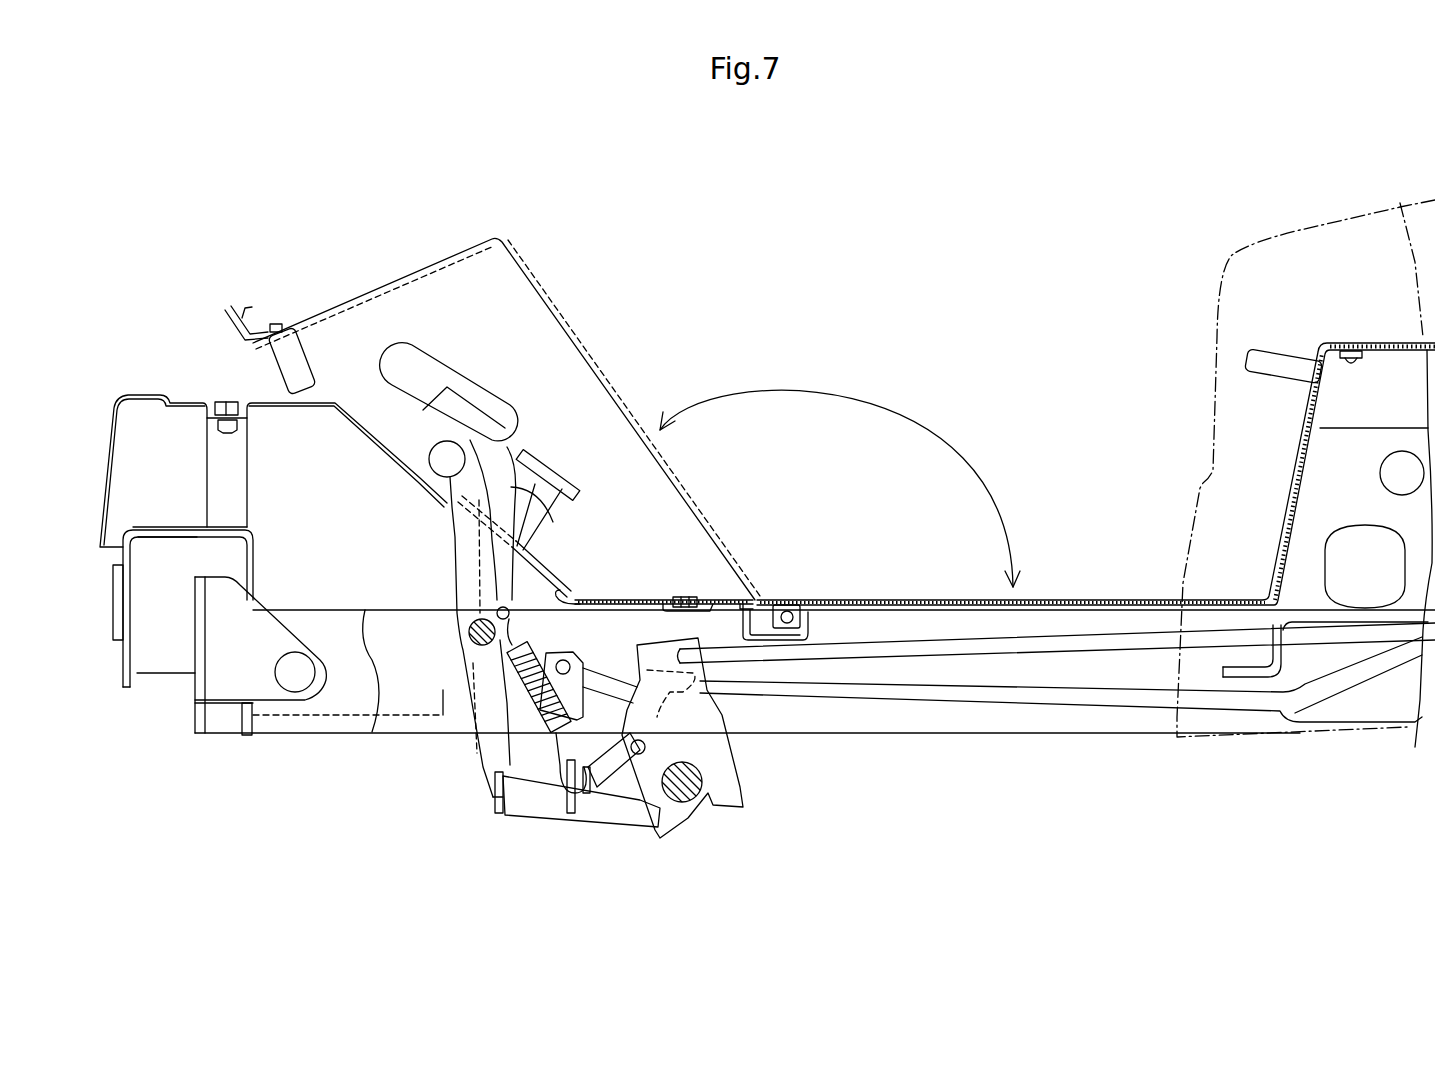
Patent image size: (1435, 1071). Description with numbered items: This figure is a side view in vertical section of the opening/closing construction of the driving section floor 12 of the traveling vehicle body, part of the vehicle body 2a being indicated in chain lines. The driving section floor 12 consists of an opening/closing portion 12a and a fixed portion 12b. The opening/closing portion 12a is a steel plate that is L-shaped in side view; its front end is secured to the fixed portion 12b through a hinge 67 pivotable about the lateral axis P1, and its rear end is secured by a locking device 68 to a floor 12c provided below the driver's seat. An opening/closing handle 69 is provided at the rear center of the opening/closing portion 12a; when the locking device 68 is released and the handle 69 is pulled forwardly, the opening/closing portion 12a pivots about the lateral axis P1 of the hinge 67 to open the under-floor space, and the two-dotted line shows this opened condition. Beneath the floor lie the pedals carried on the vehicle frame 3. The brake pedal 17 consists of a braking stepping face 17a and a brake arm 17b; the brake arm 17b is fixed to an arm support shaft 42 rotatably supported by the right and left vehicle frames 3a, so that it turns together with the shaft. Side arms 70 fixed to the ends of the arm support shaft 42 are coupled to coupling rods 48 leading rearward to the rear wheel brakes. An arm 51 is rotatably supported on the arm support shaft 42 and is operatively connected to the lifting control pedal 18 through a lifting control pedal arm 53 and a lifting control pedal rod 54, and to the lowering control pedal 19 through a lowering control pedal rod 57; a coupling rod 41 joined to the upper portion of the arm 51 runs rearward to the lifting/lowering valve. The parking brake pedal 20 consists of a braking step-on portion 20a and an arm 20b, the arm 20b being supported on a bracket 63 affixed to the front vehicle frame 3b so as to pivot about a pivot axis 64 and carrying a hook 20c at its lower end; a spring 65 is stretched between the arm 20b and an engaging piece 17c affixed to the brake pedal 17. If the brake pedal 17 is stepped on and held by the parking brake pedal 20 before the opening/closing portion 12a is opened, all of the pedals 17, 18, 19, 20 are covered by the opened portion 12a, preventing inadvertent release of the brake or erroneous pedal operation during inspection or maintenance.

The vehicle body side panel 2a is at (1285, 230).
The seat frame 3 is at (779, 592).
The vehicle frames 3a is at (1130, 735).
The vehicle frame 3b is at (256, 578).
The driving section floor 12 is at (830, 424).
The opening/closing portion 12a is at (545, 296).
The fixed portion 12b is at (643, 598).
The floor 12c is at (1375, 343).
The brake pedal 17 is at (519, 578).
The braking stepping face 17a is at (438, 340).
The brake arm 17b is at (540, 525).
The engaging piece 17c is at (492, 815).
The lifting control pedal 18 is at (553, 470).
The lowering control pedal 19 is at (540, 452).
The parking brake pedal 20 is at (433, 608).
The braking step-on portion 20a is at (432, 452).
The arm 20b is at (452, 586).
The hook 20c is at (478, 768).
The coupling rod 41 is at (1070, 710).
The arm support shaft 42 is at (690, 790).
The coupling rods 48 is at (930, 655).
The arm 51 is at (626, 790).
The lifting control pedal arm 53 is at (573, 645).
The lifting control pedal rod 54 is at (603, 665).
The lowering control pedal rod 57 is at (603, 792).
The bracket 63 is at (417, 712).
The pivot axis 64 is at (469, 633).
The spring 65 is at (548, 770).
The hinge 67 is at (801, 660).
The locking device 68 is at (1357, 364).
The opening/closing handle 69 is at (272, 357).
The side arms 70 is at (707, 737).
The lateral axis P1 is at (788, 624).